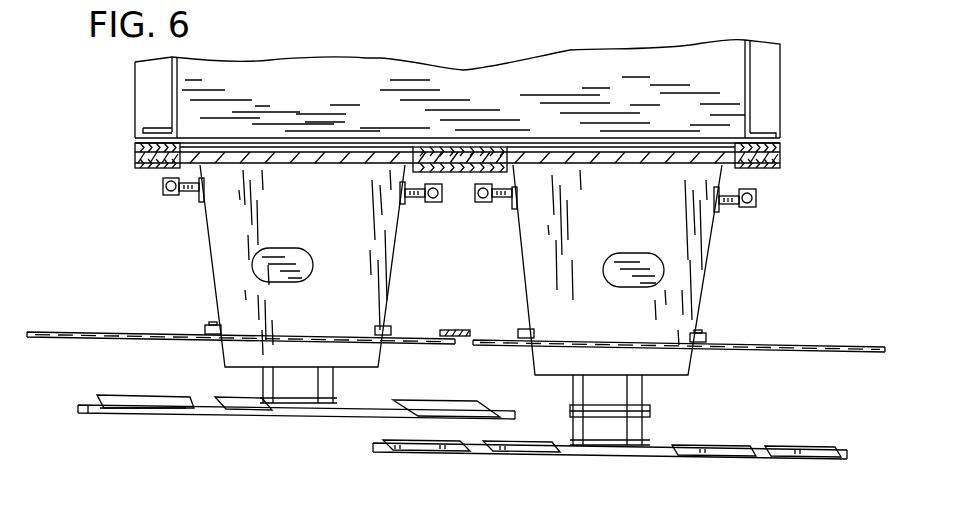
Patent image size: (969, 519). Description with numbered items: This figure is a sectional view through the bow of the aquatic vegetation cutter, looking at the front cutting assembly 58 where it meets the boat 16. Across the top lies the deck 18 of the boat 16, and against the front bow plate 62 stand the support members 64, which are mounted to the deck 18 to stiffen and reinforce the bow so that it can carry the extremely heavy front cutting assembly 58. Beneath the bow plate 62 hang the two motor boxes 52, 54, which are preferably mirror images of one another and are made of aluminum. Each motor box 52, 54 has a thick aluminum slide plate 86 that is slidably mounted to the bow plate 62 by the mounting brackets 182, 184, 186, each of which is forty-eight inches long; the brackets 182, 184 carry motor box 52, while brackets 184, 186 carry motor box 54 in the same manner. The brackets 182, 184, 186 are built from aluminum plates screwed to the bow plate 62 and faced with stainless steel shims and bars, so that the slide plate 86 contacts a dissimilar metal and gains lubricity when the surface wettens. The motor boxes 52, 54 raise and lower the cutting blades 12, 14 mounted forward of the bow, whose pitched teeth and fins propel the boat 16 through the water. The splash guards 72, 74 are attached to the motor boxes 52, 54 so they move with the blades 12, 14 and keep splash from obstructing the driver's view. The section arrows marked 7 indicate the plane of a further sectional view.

The section line 7- 7 is at (150, 232).
The cutting blade 12 is at (112, 413).
The cutting blade 14 is at (802, 458).
The boat 16 is at (328, 66).
The deck 18 is at (536, 68).
The motor box 52 is at (218, 279).
The motor box 54 is at (690, 309).
The front cutting assembly 58 is at (365, 456).
The bow plate 62 is at (530, 146).
The support members 64 is at (178, 114).
The splash guard 72 is at (67, 332).
The splash guard 74 is at (835, 343).
The slide plate 86 is at (333, 164).
The mounting bracket 182 is at (146, 166).
The mounting bracket 184 is at (462, 176).
The mounting bracket 186 is at (768, 178).